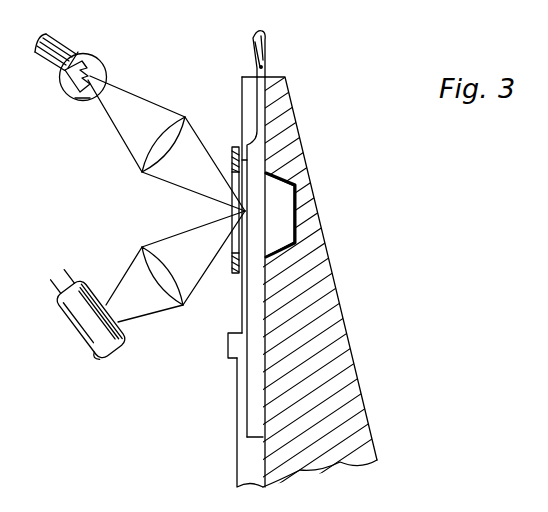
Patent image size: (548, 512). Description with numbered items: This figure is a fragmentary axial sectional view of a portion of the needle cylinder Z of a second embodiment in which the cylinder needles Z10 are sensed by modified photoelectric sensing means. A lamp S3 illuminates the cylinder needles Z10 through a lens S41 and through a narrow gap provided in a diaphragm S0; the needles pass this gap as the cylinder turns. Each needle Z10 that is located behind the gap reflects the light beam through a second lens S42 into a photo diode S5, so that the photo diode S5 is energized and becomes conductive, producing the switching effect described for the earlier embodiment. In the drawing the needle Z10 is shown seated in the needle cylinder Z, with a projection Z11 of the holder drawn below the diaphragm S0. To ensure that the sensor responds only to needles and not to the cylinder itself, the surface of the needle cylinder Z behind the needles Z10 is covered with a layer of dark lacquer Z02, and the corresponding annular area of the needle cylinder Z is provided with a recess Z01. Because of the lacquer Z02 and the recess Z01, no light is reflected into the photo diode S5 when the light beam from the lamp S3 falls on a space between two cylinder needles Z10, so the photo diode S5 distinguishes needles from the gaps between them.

The lamp S3 is at (97, 66).
The lens S41 is at (170, 120).
The diaphragm S0 is at (236, 146).
The cylinder needles Z10 is at (268, 68).
The layer of dark lacquer Z02 is at (300, 196).
The recess Z01 is at (285, 212).
The needle cylinder Z is at (330, 336).
The projection of needle holder Z11 is at (233, 357).
The lens S42 is at (169, 293).
The photo diode S5 is at (93, 356).